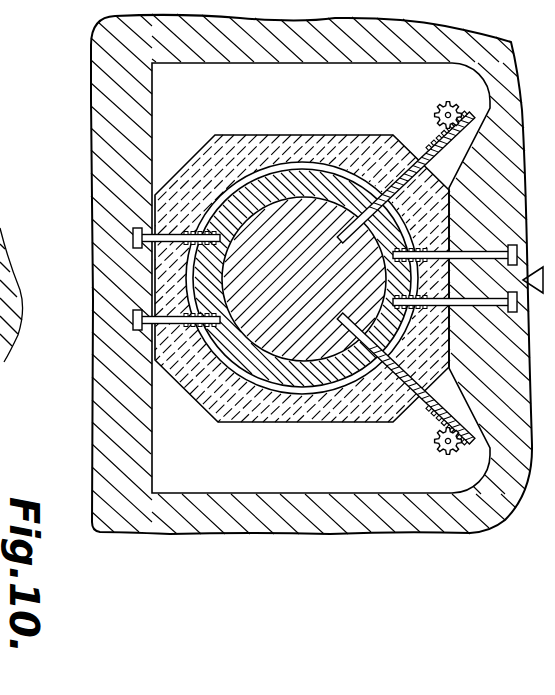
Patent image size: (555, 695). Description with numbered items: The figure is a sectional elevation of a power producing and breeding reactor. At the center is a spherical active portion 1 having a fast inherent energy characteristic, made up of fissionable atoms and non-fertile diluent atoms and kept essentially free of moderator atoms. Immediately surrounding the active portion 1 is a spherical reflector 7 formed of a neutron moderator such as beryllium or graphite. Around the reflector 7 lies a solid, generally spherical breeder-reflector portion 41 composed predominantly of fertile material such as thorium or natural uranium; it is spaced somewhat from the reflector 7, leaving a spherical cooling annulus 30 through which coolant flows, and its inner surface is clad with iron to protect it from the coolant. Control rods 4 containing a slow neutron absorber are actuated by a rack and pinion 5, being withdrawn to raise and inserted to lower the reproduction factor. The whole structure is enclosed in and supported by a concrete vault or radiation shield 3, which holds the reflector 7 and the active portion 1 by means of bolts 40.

The spherical active portion 1 is at (330, 233).
The concrete vault or radiation shield 3 is at (311, 274).
The control rods 4 is at (458, 410).
The rack and pinion 5 is at (441, 433).
The spherical reflector 7 is at (273, 370).
The spherical cooling annulus 30 is at (338, 382).
The bolts 40 is at (539, 280).
The breeder-reflector portion 41 is at (375, 400).